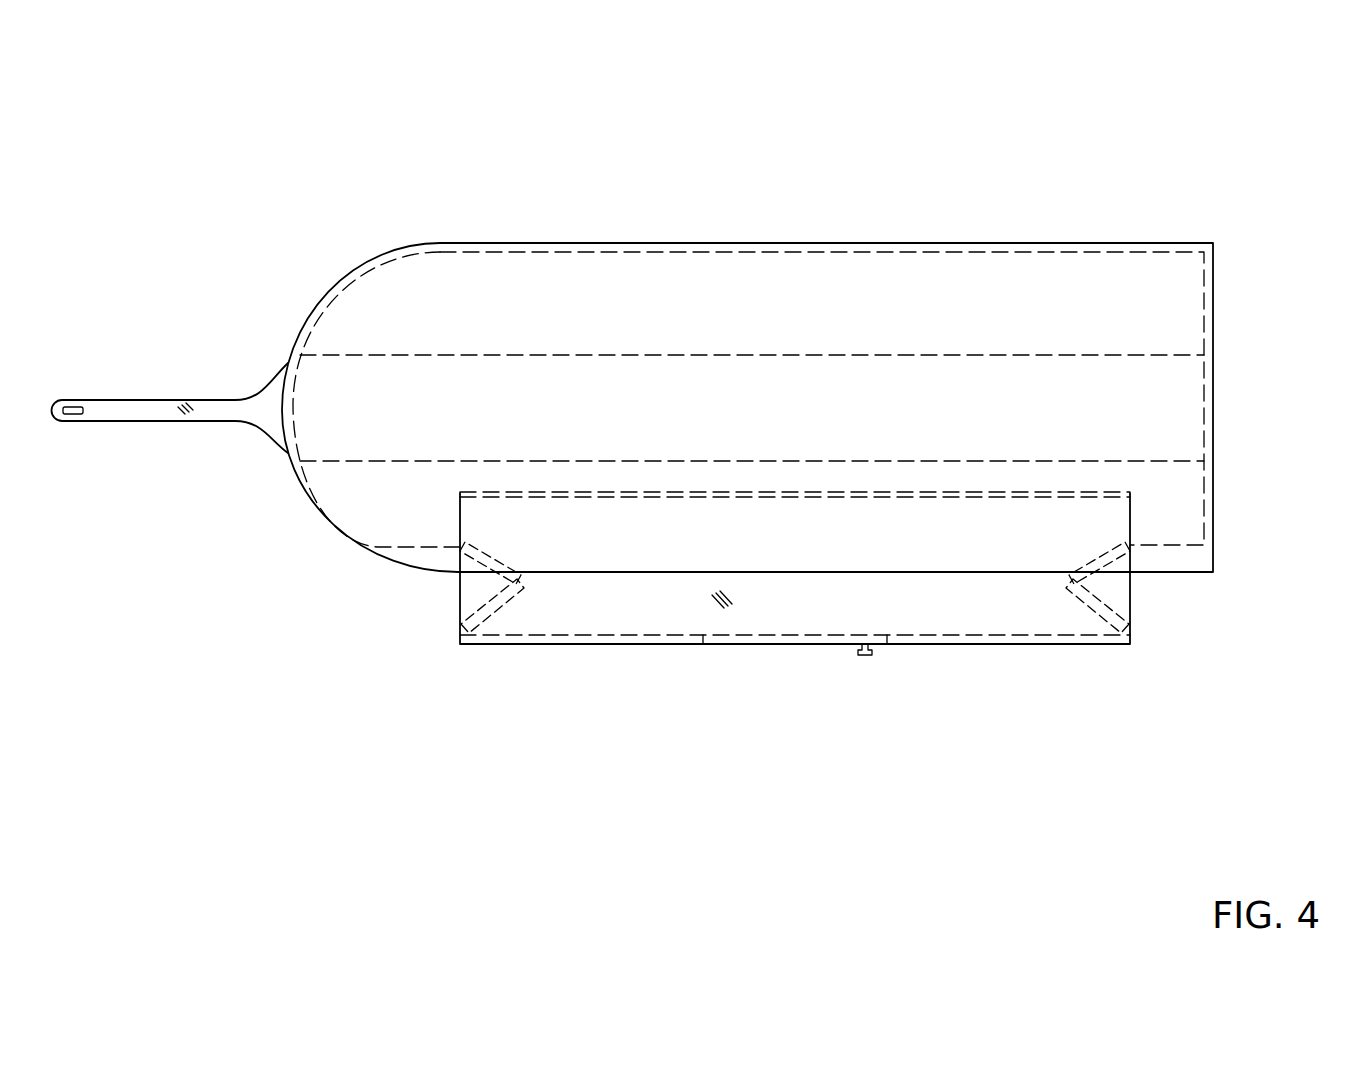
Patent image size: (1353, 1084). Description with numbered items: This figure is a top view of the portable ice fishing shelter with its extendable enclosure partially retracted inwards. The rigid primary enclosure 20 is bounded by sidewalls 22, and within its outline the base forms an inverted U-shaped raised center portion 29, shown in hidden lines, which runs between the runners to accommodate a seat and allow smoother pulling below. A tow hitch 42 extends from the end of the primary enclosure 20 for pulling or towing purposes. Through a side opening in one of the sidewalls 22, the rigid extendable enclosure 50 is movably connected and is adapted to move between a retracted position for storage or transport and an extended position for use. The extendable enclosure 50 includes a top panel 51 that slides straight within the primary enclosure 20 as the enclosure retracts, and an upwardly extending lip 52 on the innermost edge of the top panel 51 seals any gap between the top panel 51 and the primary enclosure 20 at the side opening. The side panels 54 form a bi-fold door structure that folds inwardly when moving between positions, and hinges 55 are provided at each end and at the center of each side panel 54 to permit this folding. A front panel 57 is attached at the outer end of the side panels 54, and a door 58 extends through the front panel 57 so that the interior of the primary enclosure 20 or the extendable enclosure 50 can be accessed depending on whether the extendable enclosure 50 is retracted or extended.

The primary enclosure 20 is at (1090, 243).
The sidewalls 22 is at (590, 243).
The raised center portion 29 is at (945, 353).
The tow hitch 42 is at (237, 402).
The extendable enclosure 50 is at (957, 650).
The top panel 51 is at (765, 490).
The lip 52 is at (852, 497).
The side panels 54 is at (455, 600).
The hinges 55 is at (462, 548).
The front panel 57 is at (617, 644).
The door 58 is at (795, 644).